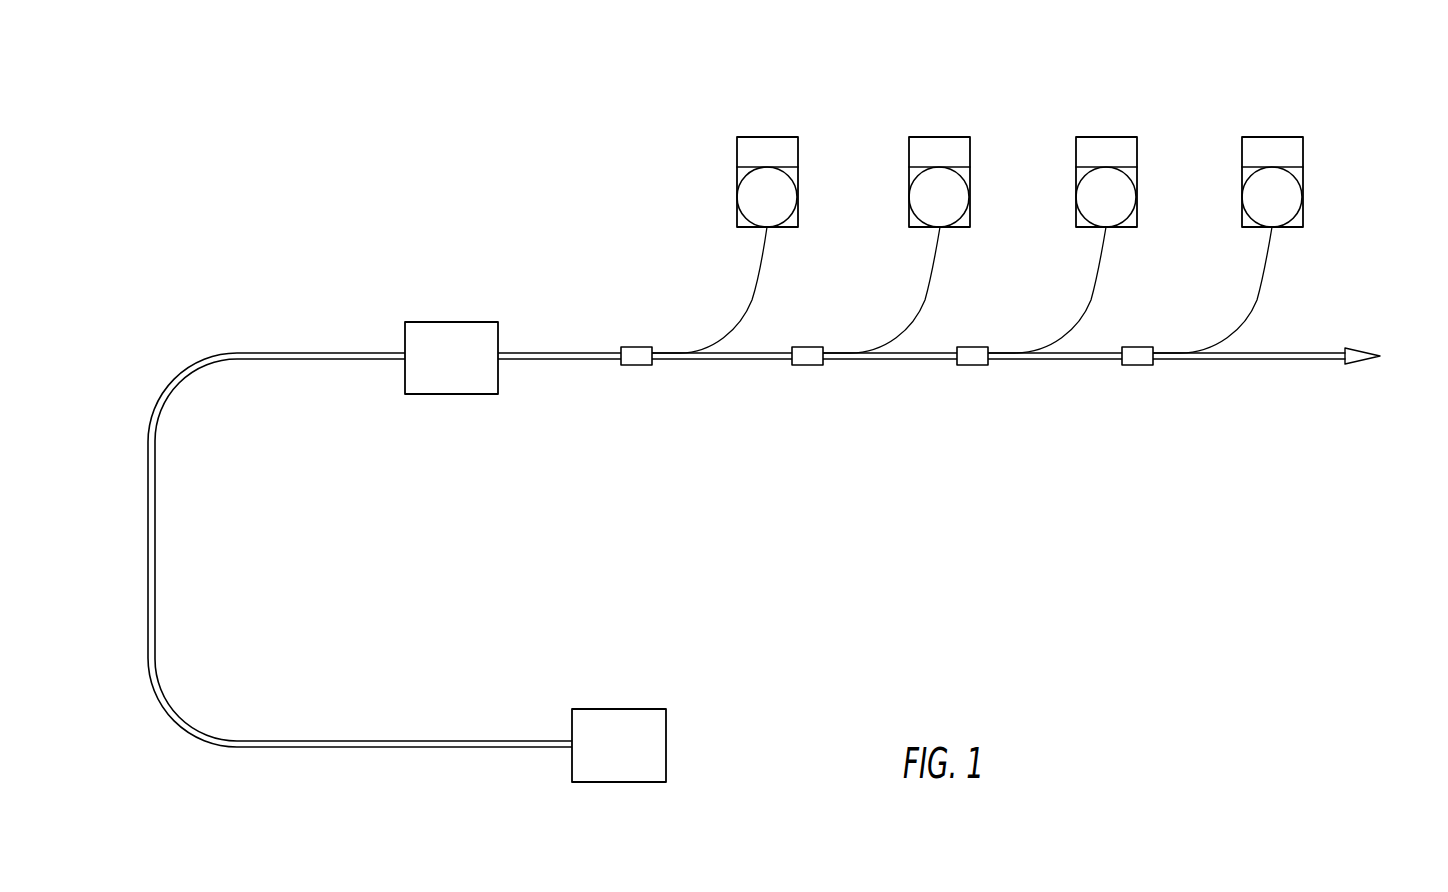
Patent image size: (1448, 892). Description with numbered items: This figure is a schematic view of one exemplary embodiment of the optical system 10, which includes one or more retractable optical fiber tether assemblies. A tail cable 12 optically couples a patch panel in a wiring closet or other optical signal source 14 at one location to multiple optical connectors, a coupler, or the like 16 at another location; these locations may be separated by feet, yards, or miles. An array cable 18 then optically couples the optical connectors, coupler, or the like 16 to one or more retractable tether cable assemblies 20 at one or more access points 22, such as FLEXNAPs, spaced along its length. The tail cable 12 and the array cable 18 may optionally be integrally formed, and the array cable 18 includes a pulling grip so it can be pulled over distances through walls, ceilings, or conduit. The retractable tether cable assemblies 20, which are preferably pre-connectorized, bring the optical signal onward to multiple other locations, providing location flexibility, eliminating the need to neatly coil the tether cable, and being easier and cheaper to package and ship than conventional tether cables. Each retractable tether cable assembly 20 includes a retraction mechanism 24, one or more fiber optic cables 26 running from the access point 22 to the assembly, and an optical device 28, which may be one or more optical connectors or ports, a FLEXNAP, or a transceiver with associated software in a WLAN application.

The optical system 10 is at (1103, 587).
The tail cable 12 is at (148, 528).
The optical signal source 14 is at (635, 709).
The optical connectors or coupler 16 is at (462, 322).
The array cable 18 is at (561, 351).
The retractable tether cable assembly 20 is at (825, 168).
The access point 22 is at (636, 365).
The retraction mechanism 24 is at (754, 207).
The fiber optic cable 26 is at (754, 290).
The optical device 28 is at (755, 161).